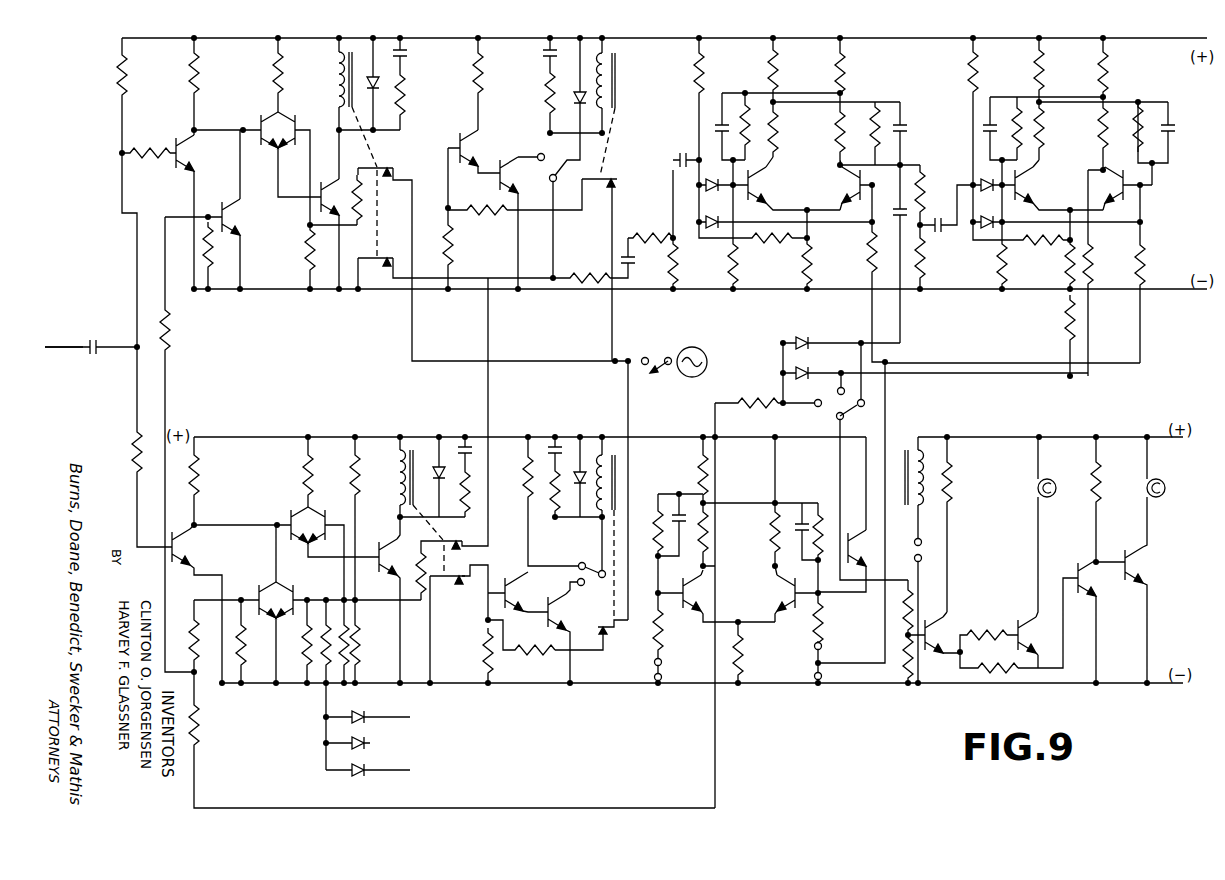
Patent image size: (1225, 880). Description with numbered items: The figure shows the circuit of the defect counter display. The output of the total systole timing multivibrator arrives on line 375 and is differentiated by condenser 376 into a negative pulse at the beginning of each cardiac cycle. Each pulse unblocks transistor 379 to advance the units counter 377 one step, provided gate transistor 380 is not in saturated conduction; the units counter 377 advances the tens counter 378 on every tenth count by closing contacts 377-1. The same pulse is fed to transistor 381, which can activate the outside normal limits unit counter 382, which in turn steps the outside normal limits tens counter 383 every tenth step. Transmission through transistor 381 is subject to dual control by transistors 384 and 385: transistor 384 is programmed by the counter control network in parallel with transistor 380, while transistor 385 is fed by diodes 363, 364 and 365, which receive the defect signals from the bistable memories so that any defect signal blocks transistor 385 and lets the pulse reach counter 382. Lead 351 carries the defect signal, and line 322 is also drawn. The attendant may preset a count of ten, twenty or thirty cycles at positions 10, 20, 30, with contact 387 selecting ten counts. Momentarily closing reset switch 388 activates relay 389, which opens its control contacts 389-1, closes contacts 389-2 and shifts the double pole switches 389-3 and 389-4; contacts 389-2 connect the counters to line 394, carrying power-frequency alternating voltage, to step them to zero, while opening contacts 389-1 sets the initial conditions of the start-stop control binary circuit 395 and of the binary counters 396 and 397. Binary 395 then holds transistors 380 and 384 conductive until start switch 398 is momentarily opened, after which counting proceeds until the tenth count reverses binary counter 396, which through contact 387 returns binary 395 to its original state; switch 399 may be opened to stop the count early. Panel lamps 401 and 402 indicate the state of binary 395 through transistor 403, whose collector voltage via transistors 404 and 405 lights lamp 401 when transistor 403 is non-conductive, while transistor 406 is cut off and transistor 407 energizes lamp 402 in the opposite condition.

The line 375 is at (76, 350).
The condenser 376 is at (91, 358).
The units counter 377 is at (376, 58).
The contacts 377-1 is at (384, 266).
The tens counter 378 is at (624, 90).
The transistor 379 is at (176, 140).
The transistor 380 is at (226, 222).
The transistor 381 is at (190, 553).
The outside normal limits unit counter 382 is at (436, 448).
The outside normal limits tens counter 383 is at (595, 448).
The transistor 384 is at (256, 592).
The transistor 385 is at (299, 598).
The contact 387 is at (868, 401).
The reset switch 388 is at (925, 556).
The relay 389 is at (911, 438).
The control contacts 389-1 is at (818, 690).
The contacts 389-2 is at (667, 355).
The double pole switch 389-3 is at (541, 152).
The double pole switch 389-4 is at (596, 598).
The line 394 is at (666, 374).
The start-stop control binary circuit 395 is at (751, 545).
The binary counter 396 is at (822, 142).
The binary counter 397 is at (1084, 142).
The start switch 398 is at (662, 663).
The switch 399 is at (822, 646).
The panel lamp 401 is at (1039, 486).
The panel lamp 402 is at (1160, 492).
The transistor 403 is at (793, 594).
The transistor 404 is at (938, 634).
The transistor 405 is at (1025, 620).
The transistor 406 is at (1062, 566).
The transistor 407 is at (1140, 570).
The ten counts 10 is at (872, 404).
The twenty counts 20 is at (831, 384).
The thirty counts 30 is at (809, 398).
The output line 322 is at (408, 718).
The lead 351 is at (405, 773).
The diode 363 is at (370, 771).
The diode 364 is at (370, 745).
The diode 365 is at (371, 720).